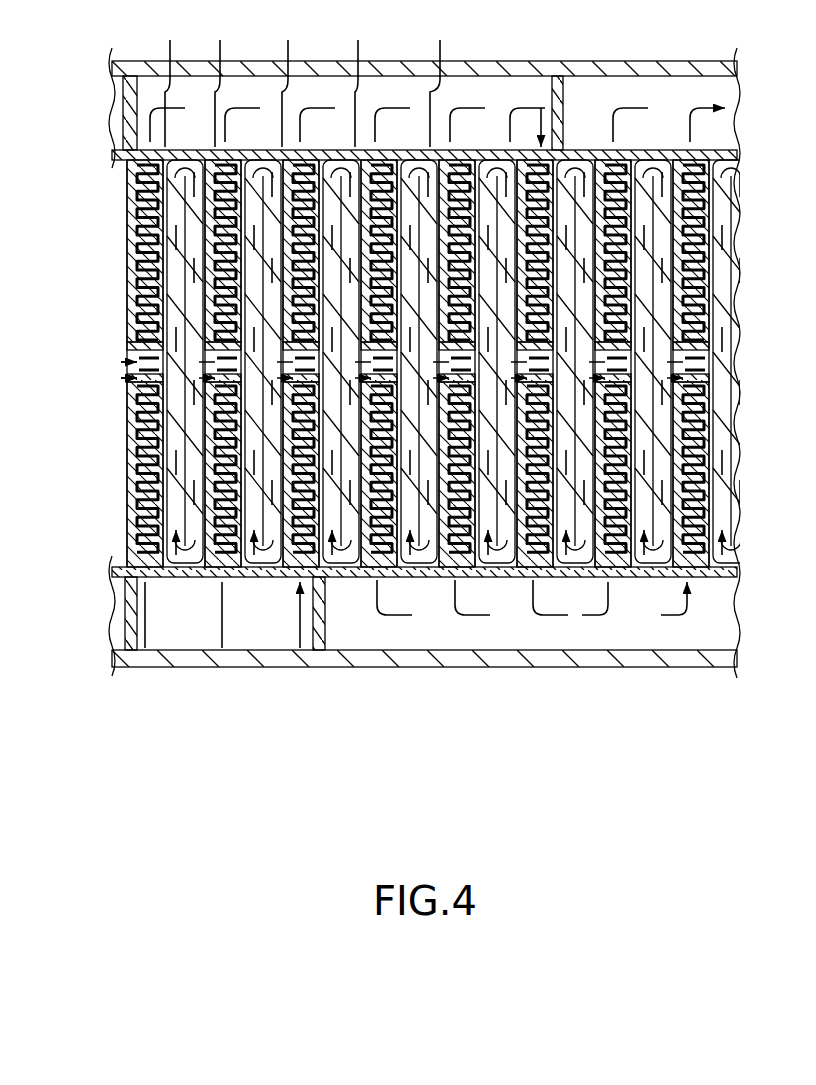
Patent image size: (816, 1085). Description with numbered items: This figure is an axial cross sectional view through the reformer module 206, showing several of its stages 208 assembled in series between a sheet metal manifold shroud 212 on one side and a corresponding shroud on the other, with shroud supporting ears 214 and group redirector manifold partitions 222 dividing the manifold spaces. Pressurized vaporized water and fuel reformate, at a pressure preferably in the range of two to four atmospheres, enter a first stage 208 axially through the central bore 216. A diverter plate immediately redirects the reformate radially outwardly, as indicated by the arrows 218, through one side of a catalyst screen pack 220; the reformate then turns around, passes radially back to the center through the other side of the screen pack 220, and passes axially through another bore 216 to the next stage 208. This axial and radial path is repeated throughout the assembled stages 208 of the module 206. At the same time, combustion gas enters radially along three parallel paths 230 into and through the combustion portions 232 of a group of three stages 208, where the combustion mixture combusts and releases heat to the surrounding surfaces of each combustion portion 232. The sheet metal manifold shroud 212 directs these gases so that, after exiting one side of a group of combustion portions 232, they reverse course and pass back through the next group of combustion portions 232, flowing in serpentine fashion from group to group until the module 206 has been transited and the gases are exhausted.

The reformer module 206 is at (405, 423).
The stage 208 is at (437, 83).
The sheet metal manifold shroud 212 is at (505, 62).
The shroud supporting ear 214 is at (250, 668).
The central bore 216 is at (132, 376).
The arrows 218 is at (137, 362).
The catalyst screen pack 220 is at (176, 425).
The group redirector manifold partition 222 is at (562, 85).
The parallel paths 230 is at (223, 605).
The combustion portion 232 is at (140, 508).